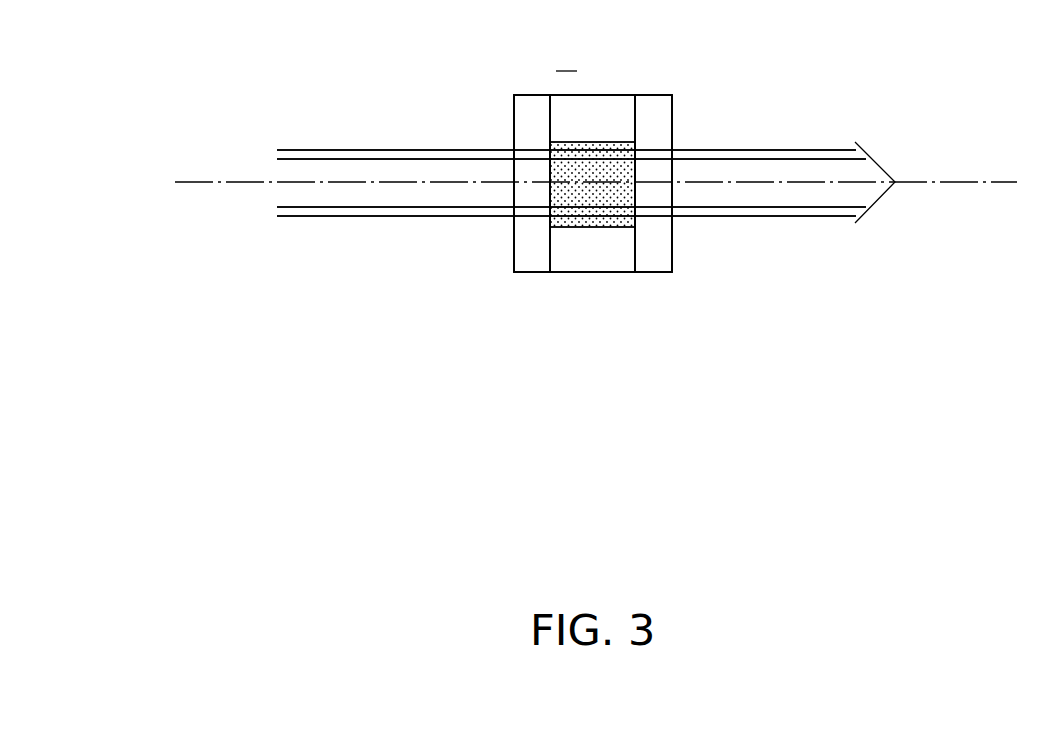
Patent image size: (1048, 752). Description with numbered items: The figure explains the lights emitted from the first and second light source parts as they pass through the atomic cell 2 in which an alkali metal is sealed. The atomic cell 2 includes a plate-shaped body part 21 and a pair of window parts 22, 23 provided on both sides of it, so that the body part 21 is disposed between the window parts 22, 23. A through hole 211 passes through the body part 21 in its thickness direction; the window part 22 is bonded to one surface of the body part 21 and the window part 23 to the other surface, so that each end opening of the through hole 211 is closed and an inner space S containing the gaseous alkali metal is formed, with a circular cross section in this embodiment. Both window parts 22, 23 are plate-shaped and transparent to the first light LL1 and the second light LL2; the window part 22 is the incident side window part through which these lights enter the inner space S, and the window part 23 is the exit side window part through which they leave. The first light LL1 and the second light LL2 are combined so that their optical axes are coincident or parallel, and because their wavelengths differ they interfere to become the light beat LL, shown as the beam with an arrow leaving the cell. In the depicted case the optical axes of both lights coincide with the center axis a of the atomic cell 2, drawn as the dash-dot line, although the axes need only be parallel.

The atomic cell 2 is at (612, 95).
The body part 21 is at (582, 260).
The through hole 211 is at (596, 226).
The window part 22 is at (533, 260).
The window part 23 is at (653, 260).
The inner space S is at (572, 173).
The light beat LL is at (794, 150).
The first light LL1 is at (448, 159).
The second light LL2 is at (448, 218).
The center axis a is at (208, 182).